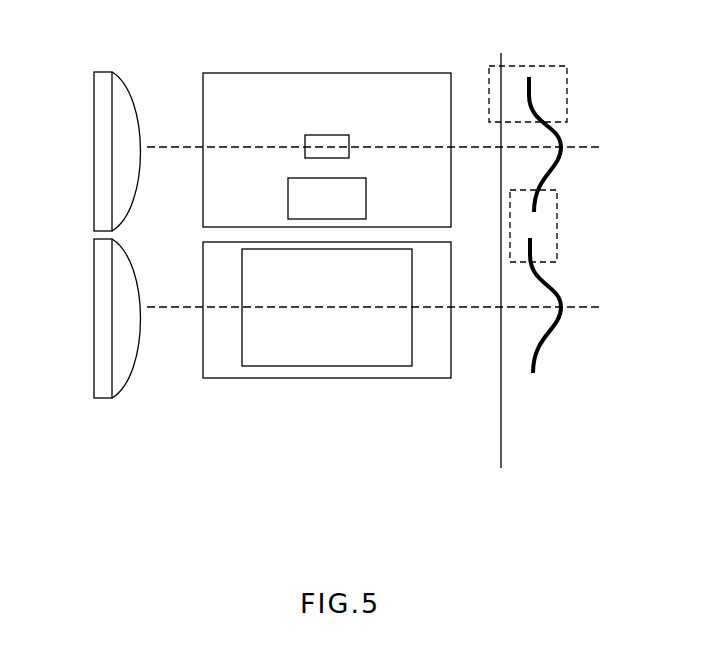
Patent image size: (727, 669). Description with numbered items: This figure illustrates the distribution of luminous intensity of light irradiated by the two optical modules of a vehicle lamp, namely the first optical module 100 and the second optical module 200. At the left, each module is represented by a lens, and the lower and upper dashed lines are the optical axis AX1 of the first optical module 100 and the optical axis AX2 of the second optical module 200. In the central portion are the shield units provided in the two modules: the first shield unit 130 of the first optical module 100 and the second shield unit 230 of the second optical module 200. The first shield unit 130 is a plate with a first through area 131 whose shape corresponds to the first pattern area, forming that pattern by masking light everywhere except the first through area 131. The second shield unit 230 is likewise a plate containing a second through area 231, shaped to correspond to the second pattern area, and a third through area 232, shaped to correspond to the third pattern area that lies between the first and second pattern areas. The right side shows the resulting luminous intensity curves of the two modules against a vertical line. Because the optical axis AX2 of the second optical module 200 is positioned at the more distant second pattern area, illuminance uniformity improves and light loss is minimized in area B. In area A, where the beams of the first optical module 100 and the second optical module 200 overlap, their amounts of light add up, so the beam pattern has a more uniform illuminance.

The first optical module 100 is at (98, 318).
The second optical module 200 is at (97, 150).
The first shield unit 130 is at (430, 378).
The first through area 131 is at (377, 366).
The second shield unit 230 is at (366, 73).
The second through area 231 is at (340, 135).
The third through area 232 is at (366, 190).
The optical axis of the first optical module AX1 is at (397, 308).
The optical axis of the second optical module AX2 is at (397, 148).
The area A is at (557, 222).
The area B is at (567, 92).